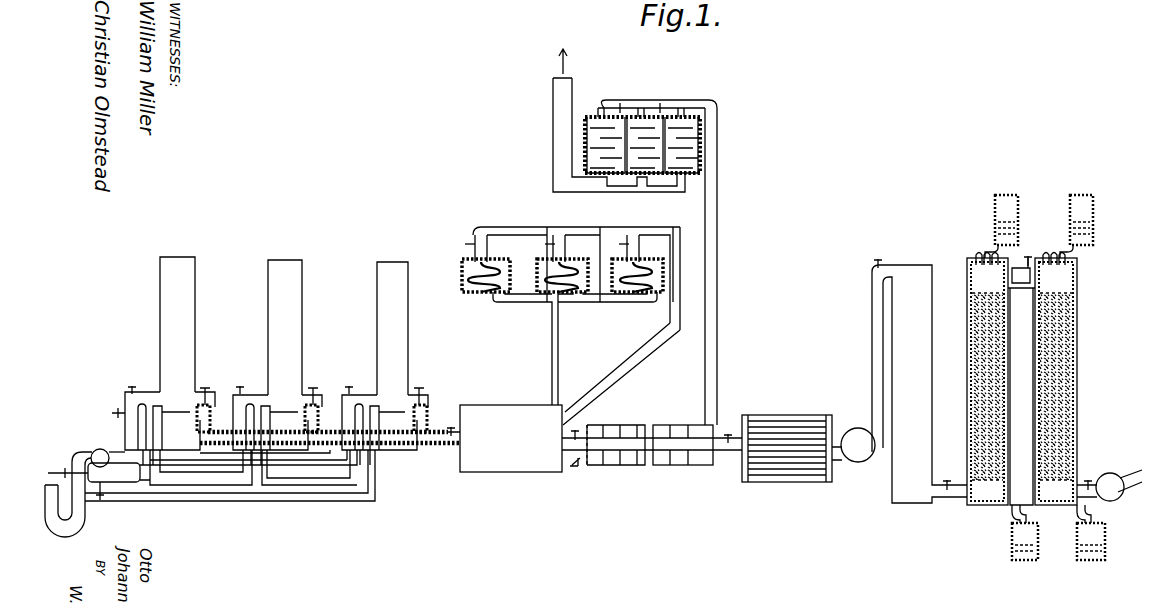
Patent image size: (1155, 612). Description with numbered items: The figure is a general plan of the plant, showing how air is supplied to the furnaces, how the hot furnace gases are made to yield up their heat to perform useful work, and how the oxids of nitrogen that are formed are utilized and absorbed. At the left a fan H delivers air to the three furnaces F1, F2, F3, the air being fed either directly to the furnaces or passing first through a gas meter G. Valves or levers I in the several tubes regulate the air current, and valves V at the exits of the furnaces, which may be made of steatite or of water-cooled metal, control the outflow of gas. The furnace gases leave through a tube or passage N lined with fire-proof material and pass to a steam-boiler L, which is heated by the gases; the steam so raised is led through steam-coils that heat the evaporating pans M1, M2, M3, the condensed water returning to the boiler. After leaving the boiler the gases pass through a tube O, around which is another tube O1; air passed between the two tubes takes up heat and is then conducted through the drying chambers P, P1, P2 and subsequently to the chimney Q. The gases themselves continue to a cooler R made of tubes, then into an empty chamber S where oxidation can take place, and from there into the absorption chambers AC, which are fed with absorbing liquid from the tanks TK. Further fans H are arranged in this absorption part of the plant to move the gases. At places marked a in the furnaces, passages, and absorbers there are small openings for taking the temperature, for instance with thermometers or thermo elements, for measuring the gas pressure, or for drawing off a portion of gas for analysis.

The furnace F1 is at (177, 324).
The furnace F2 is at (285, 327).
The furnace F3 is at (392, 328).
The small openings a is at (82, 452).
The valves or levers I is at (101, 500).
The valves at the exits of the furnaces V is at (310, 386).
The gas meter G is at (108, 451).
The tube or passage N is at (198, 440).
The fan H is at (1112, 512).
The steam-boiler L is at (511, 438).
The evaporating pan M1 is at (500, 262).
The evaporating pan M2 is at (575, 262).
The evaporating pan M3 is at (647, 262).
The drying chamber P is at (588, 117).
The drying chamber P1 is at (632, 117).
The drying chamber P2 is at (670, 117).
The chimney Q is at (553, 112).
The tube O is at (600, 466).
The outer tube O1 is at (668, 466).
The cooler R is at (787, 437).
The empty chamber S is at (919, 384).
The absorption chambers AC is at (1077, 370).
The tanks TK is at (1052, 226).